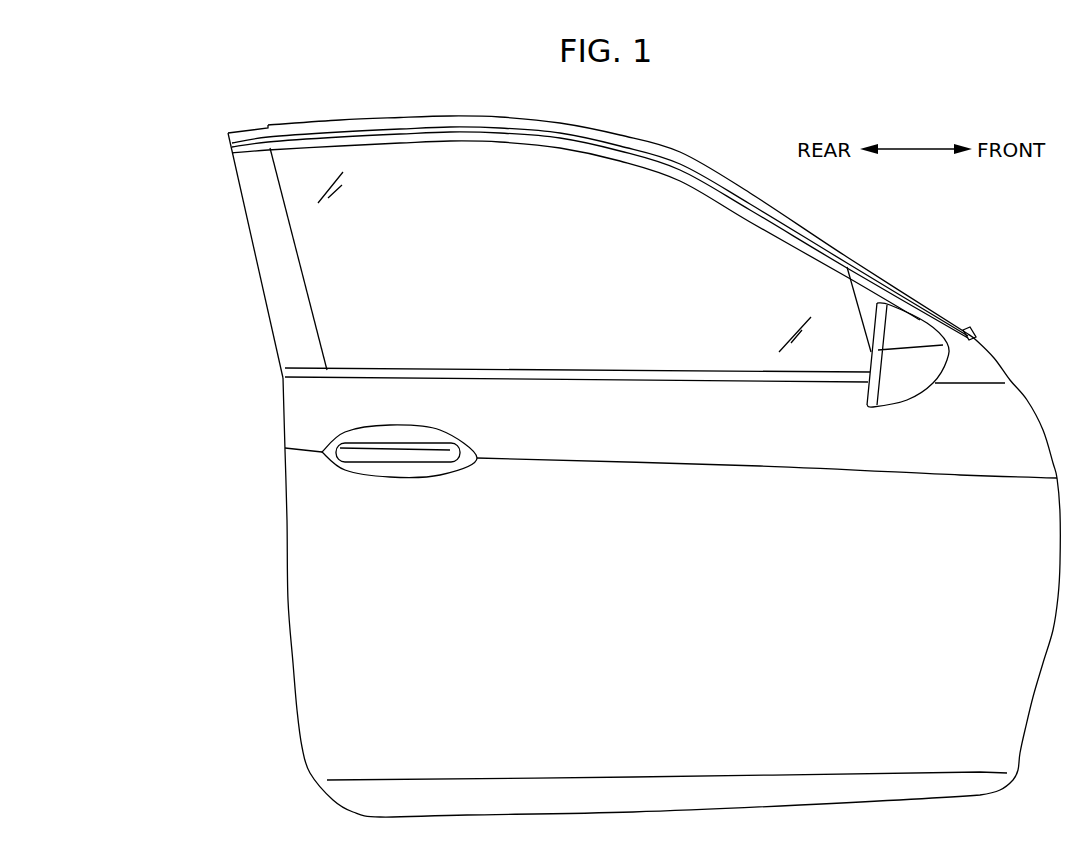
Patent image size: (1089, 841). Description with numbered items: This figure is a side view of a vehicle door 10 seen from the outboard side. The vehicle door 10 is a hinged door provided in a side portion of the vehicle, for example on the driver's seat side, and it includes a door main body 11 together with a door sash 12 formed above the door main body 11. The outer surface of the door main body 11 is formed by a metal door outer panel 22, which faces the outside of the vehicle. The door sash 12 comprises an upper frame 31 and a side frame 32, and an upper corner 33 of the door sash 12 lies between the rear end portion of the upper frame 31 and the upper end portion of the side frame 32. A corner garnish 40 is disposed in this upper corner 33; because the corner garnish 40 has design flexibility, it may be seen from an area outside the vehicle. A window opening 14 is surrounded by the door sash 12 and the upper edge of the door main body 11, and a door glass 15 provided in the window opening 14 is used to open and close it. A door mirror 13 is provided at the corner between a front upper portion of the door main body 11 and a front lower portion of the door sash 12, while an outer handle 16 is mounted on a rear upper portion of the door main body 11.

The vehicle door 10 is at (155, 241).
The door main body 11 is at (274, 570).
The door sash 12 is at (224, 192).
The door mirror 13 is at (948, 352).
The window opening 14 is at (310, 294).
The door glass 15 is at (627, 200).
The outer handle 16 is at (393, 463).
The door outer panel 22 is at (293, 664).
The upper frame 31 is at (503, 117).
The side frame 32 is at (267, 313).
The upper corner 33 is at (333, 171).
The corner garnish 40 is at (278, 152).